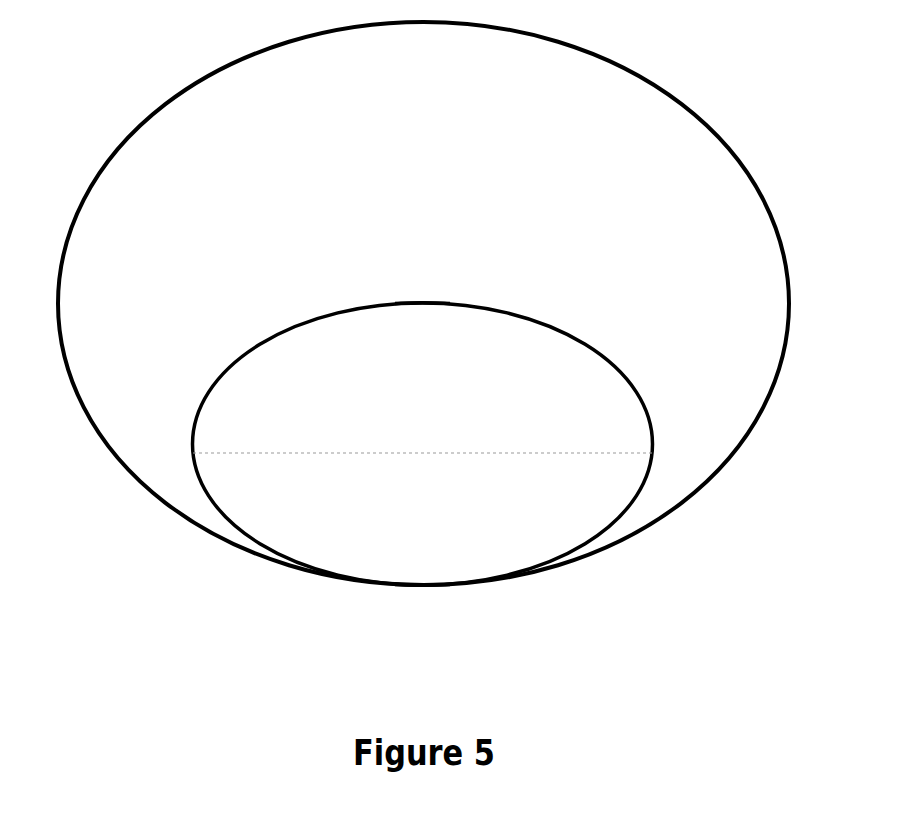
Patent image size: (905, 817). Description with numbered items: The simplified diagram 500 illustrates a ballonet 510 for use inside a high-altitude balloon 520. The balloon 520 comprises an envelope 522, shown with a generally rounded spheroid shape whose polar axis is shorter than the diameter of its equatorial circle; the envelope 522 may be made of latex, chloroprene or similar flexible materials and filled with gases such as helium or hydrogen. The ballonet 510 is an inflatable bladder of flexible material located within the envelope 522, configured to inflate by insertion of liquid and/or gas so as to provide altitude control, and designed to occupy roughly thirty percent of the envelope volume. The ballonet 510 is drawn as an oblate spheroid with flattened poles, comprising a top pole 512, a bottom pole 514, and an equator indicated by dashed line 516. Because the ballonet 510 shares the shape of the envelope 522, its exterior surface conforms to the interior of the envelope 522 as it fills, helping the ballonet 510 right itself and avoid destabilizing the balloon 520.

The simplified diagram 500 is at (398, 333).
The ballonet 510 is at (444, 411).
The top pole 512 is at (410, 303).
The bottom pole 514 is at (420, 586).
The dashed line 516 is at (283, 453).
The high-altitude balloon 520 is at (76, 350).
The envelope 522 is at (722, 317).